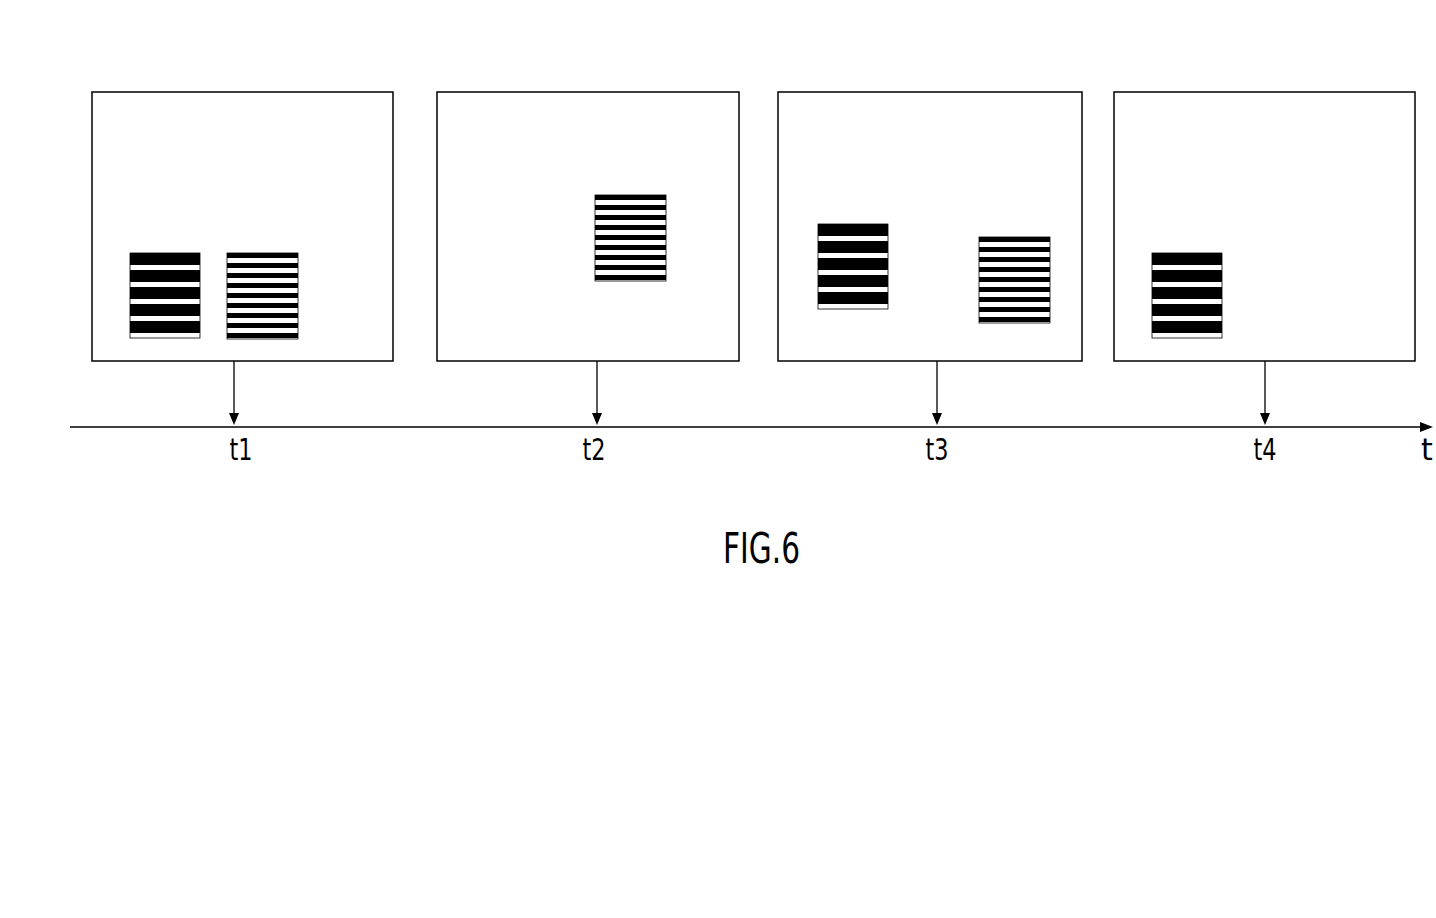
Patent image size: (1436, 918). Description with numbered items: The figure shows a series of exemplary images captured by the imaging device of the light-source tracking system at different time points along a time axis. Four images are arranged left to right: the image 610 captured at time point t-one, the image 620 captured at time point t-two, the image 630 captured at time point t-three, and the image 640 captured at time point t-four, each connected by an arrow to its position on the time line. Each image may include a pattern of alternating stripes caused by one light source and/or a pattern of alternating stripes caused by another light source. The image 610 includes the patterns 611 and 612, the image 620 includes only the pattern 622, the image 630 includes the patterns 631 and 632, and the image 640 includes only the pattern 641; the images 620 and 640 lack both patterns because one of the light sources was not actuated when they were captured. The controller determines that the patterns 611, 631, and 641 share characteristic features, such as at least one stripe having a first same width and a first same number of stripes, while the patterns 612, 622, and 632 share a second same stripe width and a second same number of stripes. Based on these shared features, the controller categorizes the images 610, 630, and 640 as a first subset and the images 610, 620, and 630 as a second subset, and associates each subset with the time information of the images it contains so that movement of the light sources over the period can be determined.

The image 610 is at (160, 93).
The pattern 611 is at (160, 257).
The pattern 612 is at (253, 254).
The image 620 is at (505, 93).
The pattern 622 is at (618, 197).
The image 630 is at (840, 93).
The pattern 631 is at (838, 227).
The pattern 632 is at (1005, 237).
The image 640 is at (1173, 93).
The pattern 641 is at (1173, 257).